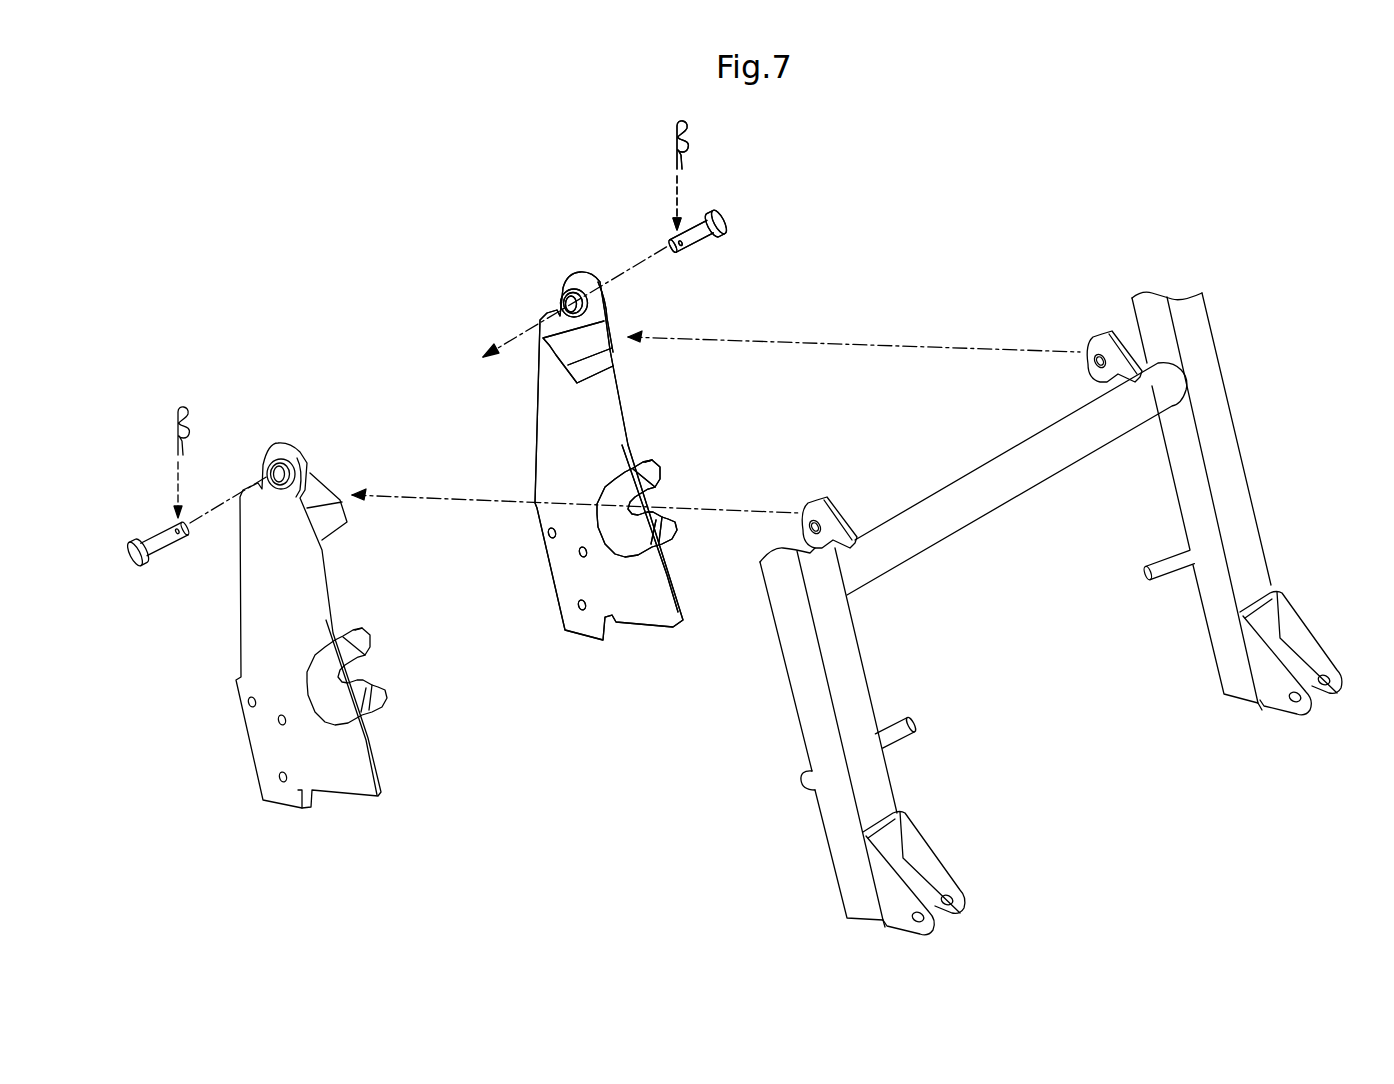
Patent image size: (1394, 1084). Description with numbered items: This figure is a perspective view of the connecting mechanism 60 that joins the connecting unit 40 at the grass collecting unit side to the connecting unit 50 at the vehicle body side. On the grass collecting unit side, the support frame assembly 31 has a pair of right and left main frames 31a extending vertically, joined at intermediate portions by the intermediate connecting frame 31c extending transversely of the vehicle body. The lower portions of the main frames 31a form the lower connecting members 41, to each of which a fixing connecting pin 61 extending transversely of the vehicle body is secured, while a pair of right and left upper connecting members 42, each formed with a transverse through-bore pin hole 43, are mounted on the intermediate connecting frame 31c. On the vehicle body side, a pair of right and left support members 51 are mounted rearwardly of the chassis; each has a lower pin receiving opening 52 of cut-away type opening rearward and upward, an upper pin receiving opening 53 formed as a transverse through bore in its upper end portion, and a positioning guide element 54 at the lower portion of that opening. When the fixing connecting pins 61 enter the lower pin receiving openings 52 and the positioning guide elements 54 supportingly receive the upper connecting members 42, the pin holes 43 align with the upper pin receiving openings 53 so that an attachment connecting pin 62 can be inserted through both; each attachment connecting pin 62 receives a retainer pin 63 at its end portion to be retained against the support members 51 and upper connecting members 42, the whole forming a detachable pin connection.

The support frame assembly 31 is at (865, 650).
The main frame 31a is at (862, 697).
The intermediate connecting frame 31c is at (1005, 485).
The connecting unit at the grass collecting unit side 40 is at (1268, 392).
The lower connecting member 41 is at (818, 750).
The upper connecting member 42 is at (813, 505).
The pin hole 43 is at (826, 523).
The connecting unit at the vehicle body side 50 is at (245, 378).
The support member 51 is at (250, 592).
The lower pin receiving opening 52 is at (332, 678).
The upper pin receiving opening 53 is at (260, 467).
The positioning guide element 54 is at (330, 515).
The connecting mechanism 60 is at (927, 252).
The fixing connecting pin 61 is at (905, 732).
The attachment connecting pin 62 is at (150, 537).
The retaining clip 63 is at (176, 432).